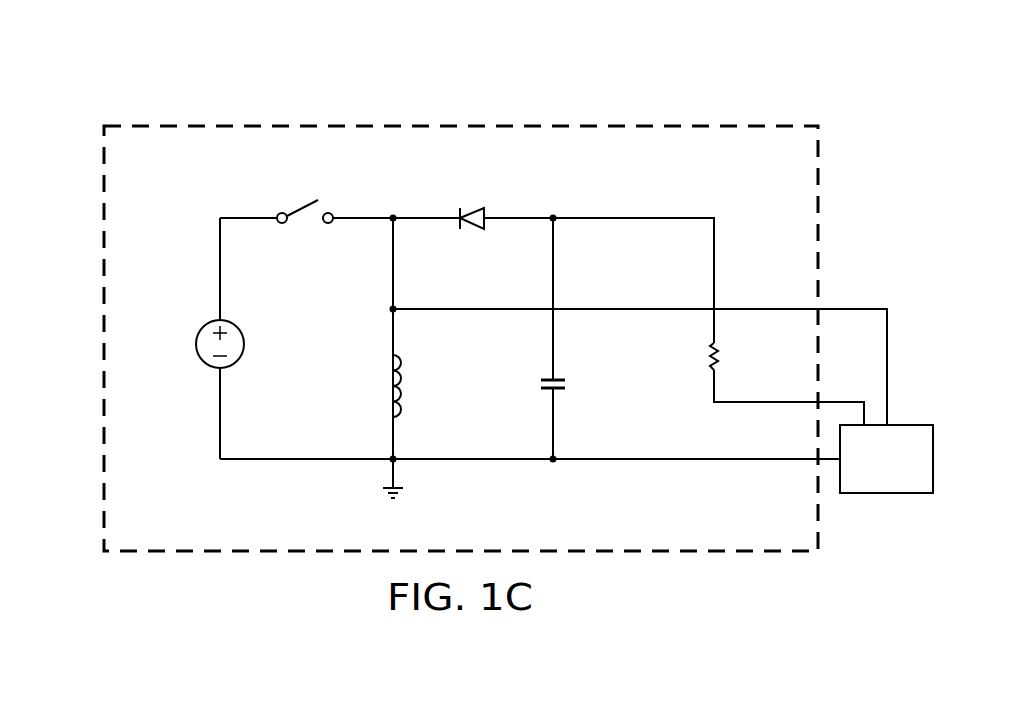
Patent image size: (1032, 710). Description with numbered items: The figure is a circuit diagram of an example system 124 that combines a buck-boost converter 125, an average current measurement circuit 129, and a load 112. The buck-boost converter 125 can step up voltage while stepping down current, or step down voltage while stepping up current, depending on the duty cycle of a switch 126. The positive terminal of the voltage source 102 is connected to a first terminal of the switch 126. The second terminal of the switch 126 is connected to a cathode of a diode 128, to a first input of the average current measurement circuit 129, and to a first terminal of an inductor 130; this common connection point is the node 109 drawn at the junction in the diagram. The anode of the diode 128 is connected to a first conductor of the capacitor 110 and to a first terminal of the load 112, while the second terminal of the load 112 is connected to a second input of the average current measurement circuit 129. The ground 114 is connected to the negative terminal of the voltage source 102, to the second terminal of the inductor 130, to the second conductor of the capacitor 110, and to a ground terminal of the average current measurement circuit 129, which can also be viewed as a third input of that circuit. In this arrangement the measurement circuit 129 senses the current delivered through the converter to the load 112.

The system 124 is at (352, 78).
The buck-boost converter 125 is at (98, 268).
The voltage source 102 is at (196, 345).
The switch 126 is at (303, 208).
The diode 128 is at (468, 206).
The node 109 is at (556, 221).
The inductor 130 is at (383, 386).
The capacitor 110 is at (567, 383).
The load 112 is at (718, 357).
The ground 114 is at (382, 498).
The average current measurement circuit 129 is at (908, 473).